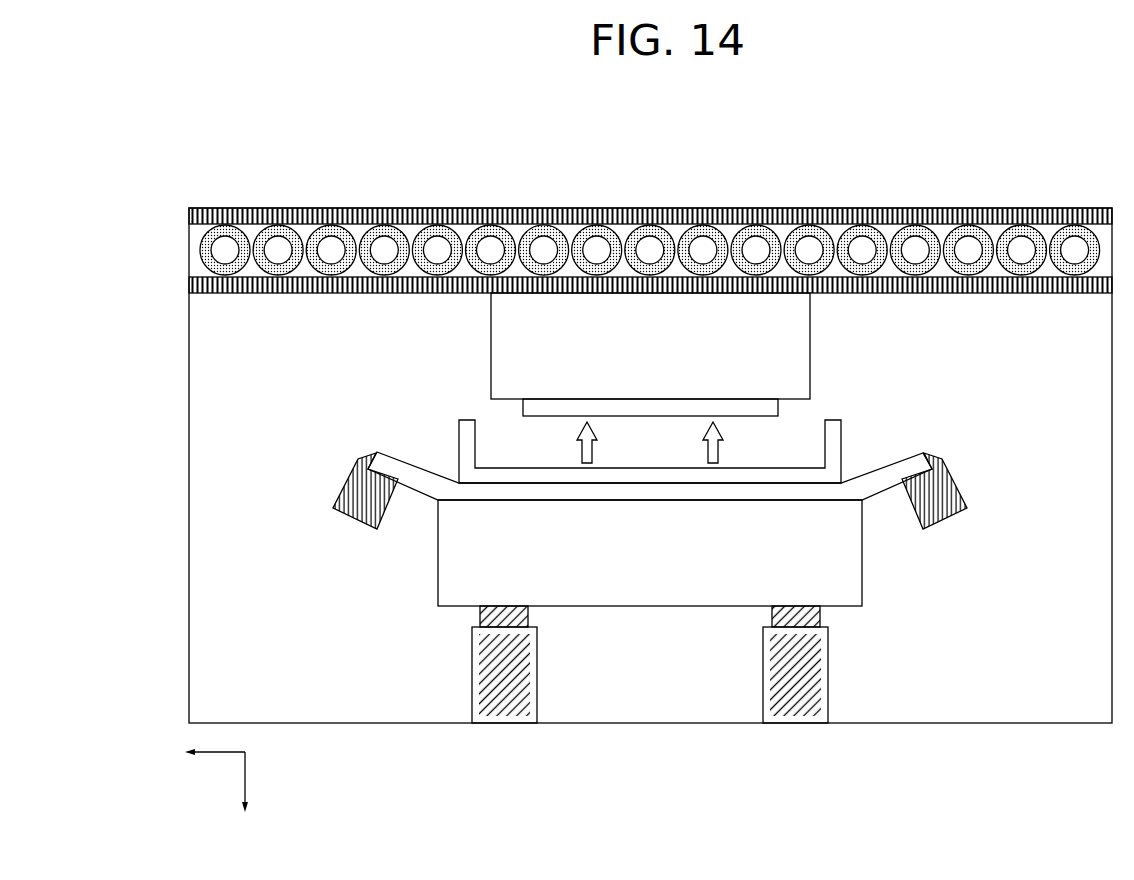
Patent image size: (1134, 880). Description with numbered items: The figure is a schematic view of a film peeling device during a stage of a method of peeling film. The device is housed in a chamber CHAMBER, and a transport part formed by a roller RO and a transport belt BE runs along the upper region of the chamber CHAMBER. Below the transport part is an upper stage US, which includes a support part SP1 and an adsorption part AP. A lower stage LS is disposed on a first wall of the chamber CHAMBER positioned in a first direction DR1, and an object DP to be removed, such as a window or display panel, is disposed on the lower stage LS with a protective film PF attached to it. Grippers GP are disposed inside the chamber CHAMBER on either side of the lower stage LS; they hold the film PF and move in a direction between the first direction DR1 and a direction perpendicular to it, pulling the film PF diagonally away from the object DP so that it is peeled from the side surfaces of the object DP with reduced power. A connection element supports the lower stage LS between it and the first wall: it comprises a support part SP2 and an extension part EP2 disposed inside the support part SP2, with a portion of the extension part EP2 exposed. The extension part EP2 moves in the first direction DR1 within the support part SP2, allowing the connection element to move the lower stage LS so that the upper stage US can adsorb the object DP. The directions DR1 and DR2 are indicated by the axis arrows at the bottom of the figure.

The chamber CHAMBER is at (189, 405).
The transport belt BE is at (276, 222).
The roller RO is at (224, 230).
The upper stage US is at (708, 357).
The support part SP1 is at (805, 343).
The adsorption part AP is at (703, 410).
The object to be removed DP is at (835, 455).
The film PF is at (918, 460).
The grippers GP is at (958, 497).
The lower stage LS is at (850, 560).
The extension part EP2 is at (840, 620).
The support part SP2 is at (840, 690).
The first direction DR1 is at (249, 796).
The second direction DR2 is at (195, 753).